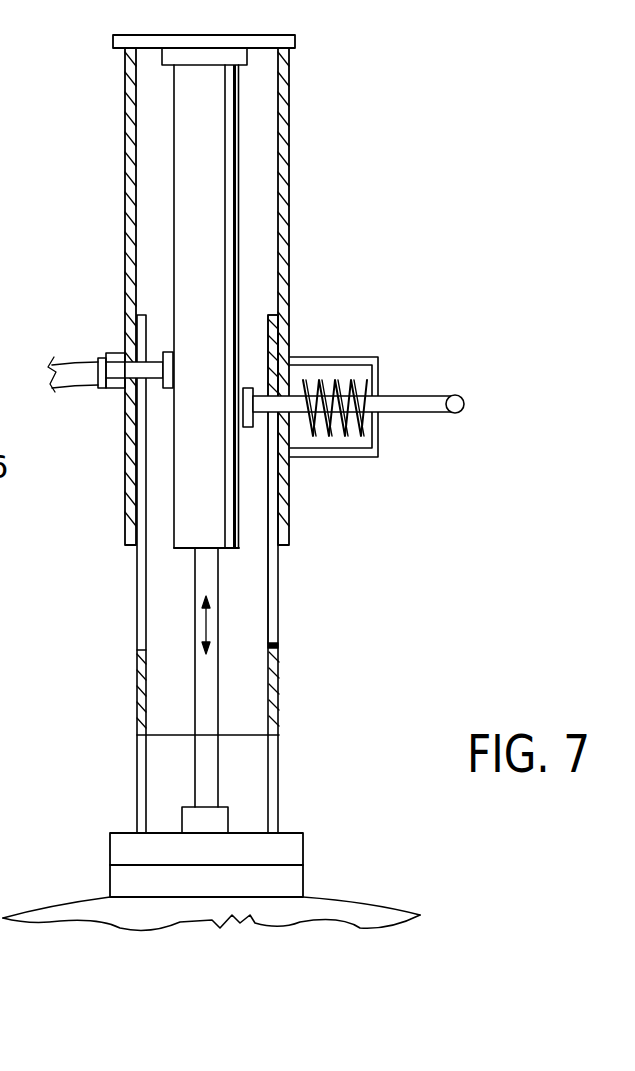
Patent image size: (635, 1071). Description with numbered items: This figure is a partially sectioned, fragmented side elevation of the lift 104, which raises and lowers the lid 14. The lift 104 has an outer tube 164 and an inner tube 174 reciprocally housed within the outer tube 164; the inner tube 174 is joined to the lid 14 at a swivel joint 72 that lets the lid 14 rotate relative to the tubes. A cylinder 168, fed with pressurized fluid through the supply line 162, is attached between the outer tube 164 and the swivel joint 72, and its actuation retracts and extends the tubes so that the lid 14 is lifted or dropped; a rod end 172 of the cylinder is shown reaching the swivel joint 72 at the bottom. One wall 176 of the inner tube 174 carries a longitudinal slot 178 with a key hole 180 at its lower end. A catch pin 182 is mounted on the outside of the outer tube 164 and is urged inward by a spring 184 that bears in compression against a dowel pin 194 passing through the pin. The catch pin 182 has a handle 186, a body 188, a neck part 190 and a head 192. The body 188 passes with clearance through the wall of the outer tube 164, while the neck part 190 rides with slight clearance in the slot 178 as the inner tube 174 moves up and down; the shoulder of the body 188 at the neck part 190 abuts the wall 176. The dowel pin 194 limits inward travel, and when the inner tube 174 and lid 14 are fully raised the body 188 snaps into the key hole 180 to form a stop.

The lift 104 is at (309, 141).
The outer tube 164 is at (285, 202).
The cylinder 168 is at (205, 282).
The supply line 162 is at (87, 372).
The neck part 190 is at (262, 398).
The head 192 is at (250, 400).
The dowel pin 194 is at (300, 380).
The catch pin 182 is at (412, 397).
The handle 186 is at (462, 400).
The body 188 is at (415, 414).
The spring 184 is at (338, 425).
The longitudinal slot 178 is at (278, 575).
The wall 176 is at (278, 600).
The key hole 180 is at (272, 652).
The inner tube 174 is at (278, 688).
The piston rod 172 is at (247, 830).
The swivel joint 72 is at (303, 865).
The lid 14 is at (358, 915).